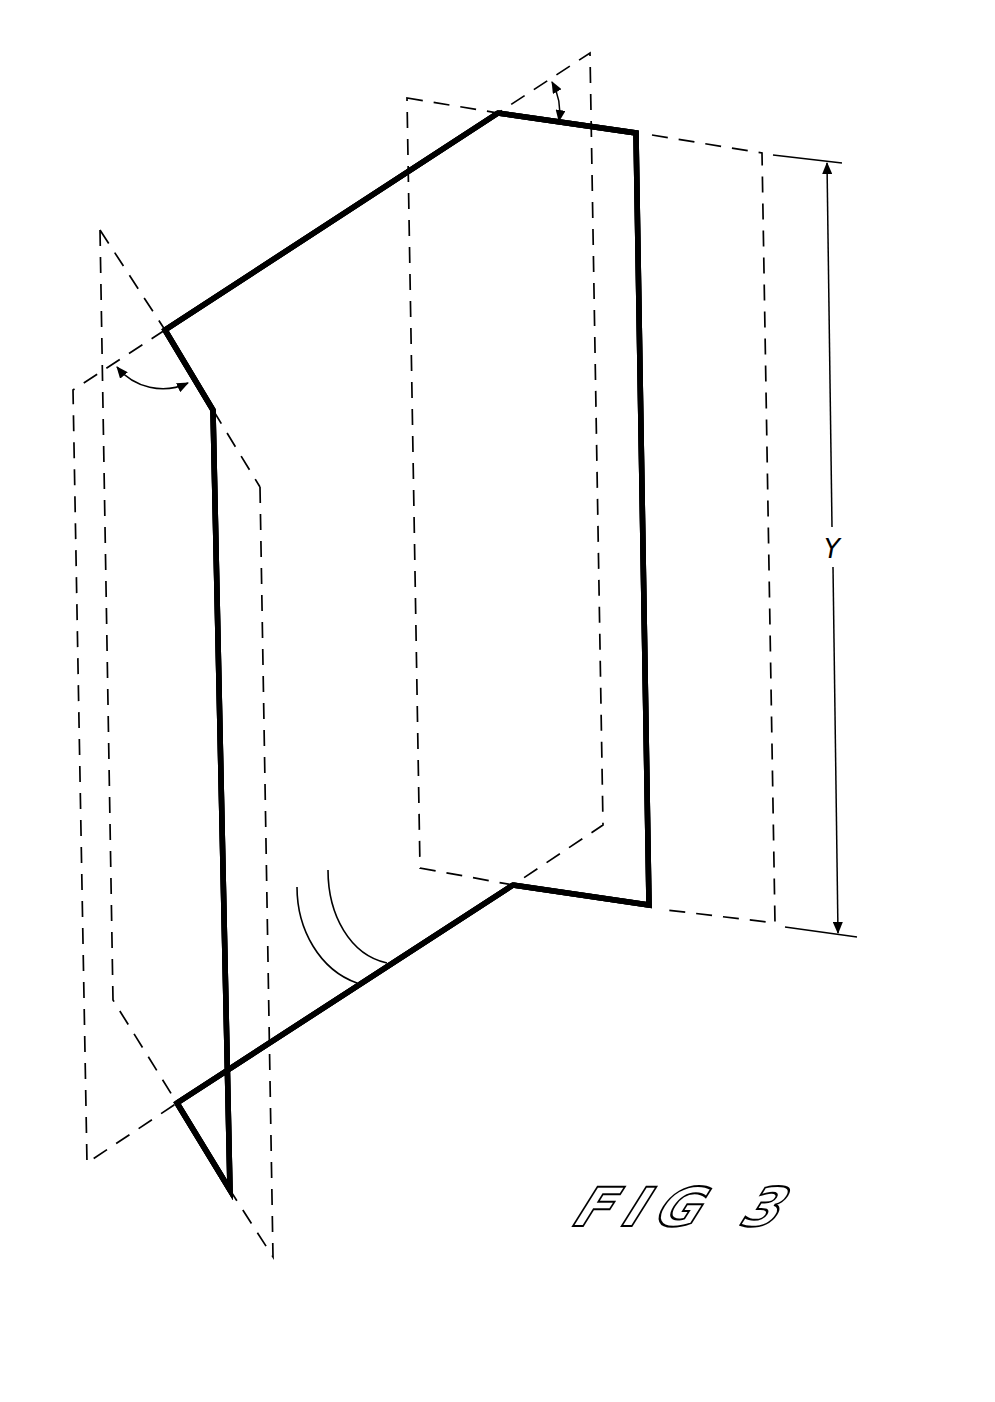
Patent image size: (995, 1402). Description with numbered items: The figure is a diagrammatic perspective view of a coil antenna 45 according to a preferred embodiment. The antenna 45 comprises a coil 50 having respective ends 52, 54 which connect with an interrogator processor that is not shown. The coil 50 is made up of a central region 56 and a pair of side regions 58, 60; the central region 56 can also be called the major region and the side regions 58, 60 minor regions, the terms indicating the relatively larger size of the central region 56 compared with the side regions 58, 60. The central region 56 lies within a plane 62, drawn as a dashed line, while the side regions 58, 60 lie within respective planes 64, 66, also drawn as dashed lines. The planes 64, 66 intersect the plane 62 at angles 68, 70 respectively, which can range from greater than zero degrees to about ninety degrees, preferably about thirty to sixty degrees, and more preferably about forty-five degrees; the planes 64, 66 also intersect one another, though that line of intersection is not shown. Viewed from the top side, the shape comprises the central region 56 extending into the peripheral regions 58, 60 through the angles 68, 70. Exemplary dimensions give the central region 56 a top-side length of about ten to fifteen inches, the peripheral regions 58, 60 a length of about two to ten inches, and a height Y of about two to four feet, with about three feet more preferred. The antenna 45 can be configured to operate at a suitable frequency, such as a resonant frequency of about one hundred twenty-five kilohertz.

The antenna 45 is at (776, 33).
The coil 50 is at (360, 203).
The end 52 is at (289, 872).
The end 54 is at (336, 873).
The central region 56 is at (250, 262).
The side region 58 is at (190, 398).
The side region 60 is at (619, 126).
The plane 62 is at (541, 78).
The plane 64 is at (272, 1148).
The plane 66 is at (698, 137).
The angle 68 is at (152, 388).
The angle 70 is at (556, 101).